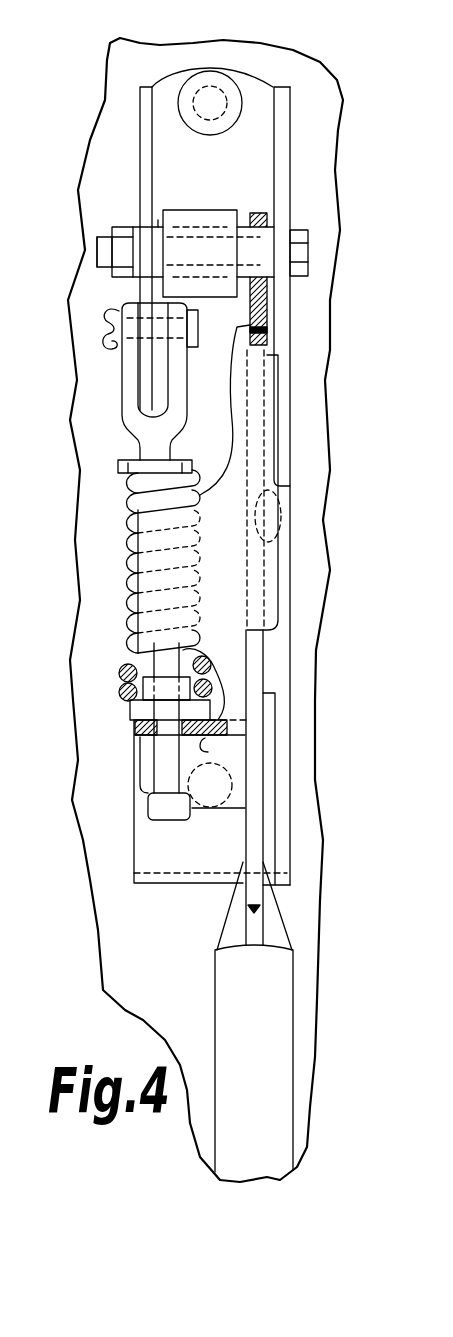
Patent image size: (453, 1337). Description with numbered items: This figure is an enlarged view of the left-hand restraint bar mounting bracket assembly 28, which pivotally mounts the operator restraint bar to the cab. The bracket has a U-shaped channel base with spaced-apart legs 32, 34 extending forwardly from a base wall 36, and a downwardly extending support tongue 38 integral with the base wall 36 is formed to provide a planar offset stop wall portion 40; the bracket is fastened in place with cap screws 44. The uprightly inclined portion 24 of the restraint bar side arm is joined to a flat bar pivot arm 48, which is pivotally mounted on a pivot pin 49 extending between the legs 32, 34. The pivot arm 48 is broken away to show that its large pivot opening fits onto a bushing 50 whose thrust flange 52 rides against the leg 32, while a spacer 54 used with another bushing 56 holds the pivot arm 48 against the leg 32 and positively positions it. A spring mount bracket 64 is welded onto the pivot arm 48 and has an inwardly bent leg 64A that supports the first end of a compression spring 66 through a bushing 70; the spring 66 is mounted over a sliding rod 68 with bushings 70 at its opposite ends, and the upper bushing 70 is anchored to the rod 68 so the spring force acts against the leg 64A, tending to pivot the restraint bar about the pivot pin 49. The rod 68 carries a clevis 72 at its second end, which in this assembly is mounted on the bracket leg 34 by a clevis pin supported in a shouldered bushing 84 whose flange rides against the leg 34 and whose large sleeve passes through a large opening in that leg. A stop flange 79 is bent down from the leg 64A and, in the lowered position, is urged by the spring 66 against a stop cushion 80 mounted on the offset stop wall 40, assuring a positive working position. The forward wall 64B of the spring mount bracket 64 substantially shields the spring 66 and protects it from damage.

The uprightly inclined portion 24 is at (227, 1005).
The restraint bar mounting bracket assembly 28 is at (97, 287).
The leg 32 is at (287, 133).
The leg 34 is at (142, 166).
The base wall 36 is at (250, 103).
The support tongue 38 is at (277, 672).
The offset stop wall portion 40 is at (160, 857).
The cap screw 44 is at (213, 97).
The pivot arm 48 is at (260, 343).
The pivot pin 49 is at (308, 253).
The bushing 50 is at (253, 247).
The thrust flange 52 is at (270, 286).
The spacer 54 is at (203, 215).
The bushing 56 is at (158, 222).
The spring mount bracket 64 is at (227, 570).
The inwardly bent leg 64A is at (206, 738).
The forward wall 64B is at (223, 523).
The compression spring 66 is at (113, 562).
The sliding rod 68 is at (170, 773).
The bushing 70 is at (120, 463).
The clevis 72 is at (123, 385).
The stop flange 79 is at (147, 760).
The stop cushion 80 is at (203, 808).
The shouldered bushing 84 is at (157, 303).